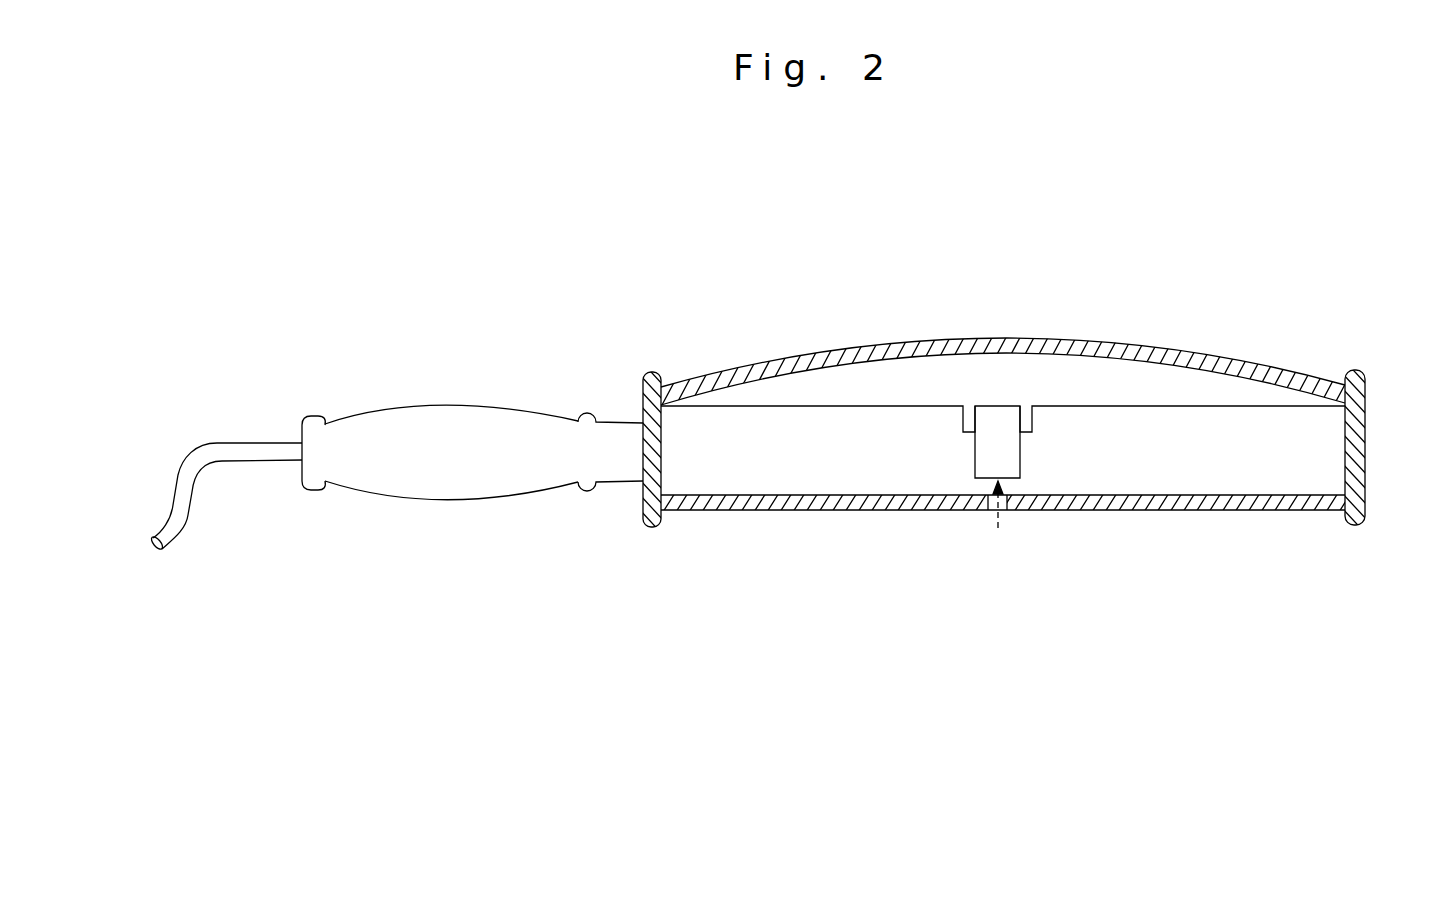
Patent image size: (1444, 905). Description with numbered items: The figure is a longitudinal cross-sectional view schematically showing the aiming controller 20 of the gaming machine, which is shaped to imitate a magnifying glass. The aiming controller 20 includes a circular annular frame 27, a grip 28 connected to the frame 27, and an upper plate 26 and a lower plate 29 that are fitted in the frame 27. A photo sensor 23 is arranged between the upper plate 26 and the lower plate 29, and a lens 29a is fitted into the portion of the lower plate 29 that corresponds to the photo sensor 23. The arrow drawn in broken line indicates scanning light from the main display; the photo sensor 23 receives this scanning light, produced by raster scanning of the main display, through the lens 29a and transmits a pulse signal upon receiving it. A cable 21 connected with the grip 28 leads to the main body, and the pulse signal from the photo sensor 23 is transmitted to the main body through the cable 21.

The aiming controller 20 is at (888, 314).
The cable 21 is at (218, 453).
The photo sensor 23 is at (1008, 448).
The upper plate 26 is at (1178, 363).
The circular annular frame 27 is at (1355, 418).
The grip 28 is at (458, 421).
The lower plate 29 is at (798, 505).
The lens 29a is at (1012, 503).